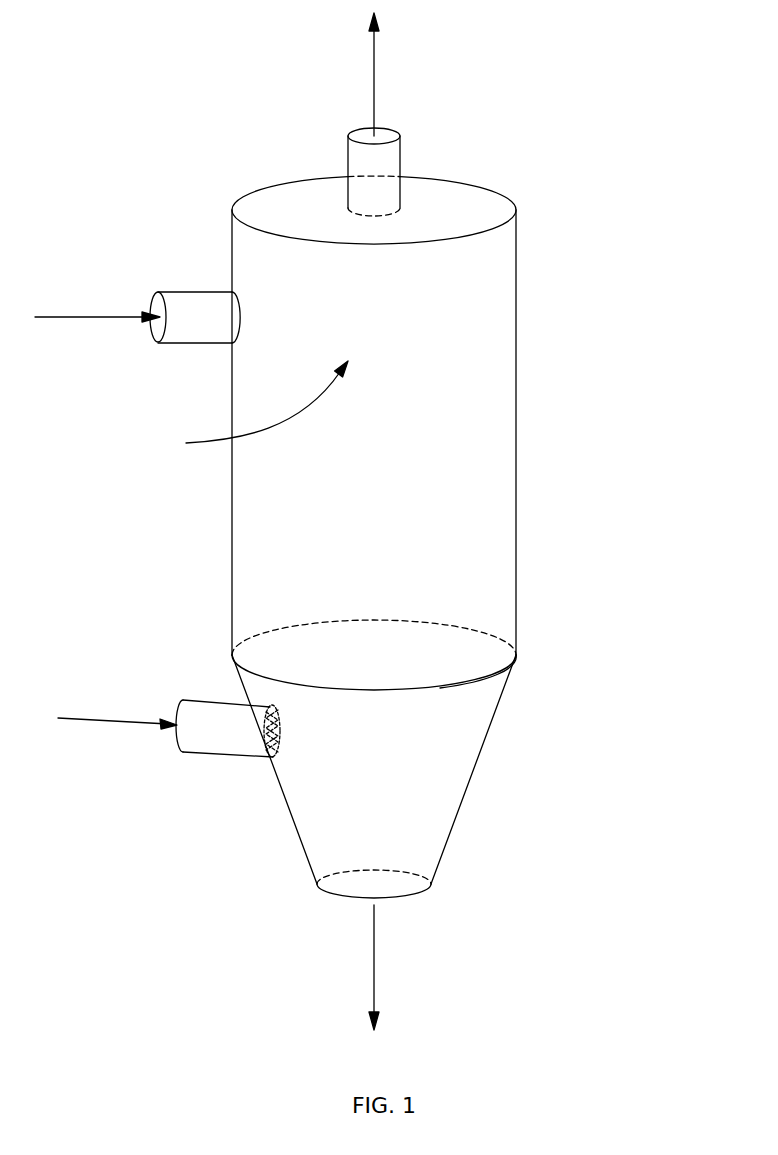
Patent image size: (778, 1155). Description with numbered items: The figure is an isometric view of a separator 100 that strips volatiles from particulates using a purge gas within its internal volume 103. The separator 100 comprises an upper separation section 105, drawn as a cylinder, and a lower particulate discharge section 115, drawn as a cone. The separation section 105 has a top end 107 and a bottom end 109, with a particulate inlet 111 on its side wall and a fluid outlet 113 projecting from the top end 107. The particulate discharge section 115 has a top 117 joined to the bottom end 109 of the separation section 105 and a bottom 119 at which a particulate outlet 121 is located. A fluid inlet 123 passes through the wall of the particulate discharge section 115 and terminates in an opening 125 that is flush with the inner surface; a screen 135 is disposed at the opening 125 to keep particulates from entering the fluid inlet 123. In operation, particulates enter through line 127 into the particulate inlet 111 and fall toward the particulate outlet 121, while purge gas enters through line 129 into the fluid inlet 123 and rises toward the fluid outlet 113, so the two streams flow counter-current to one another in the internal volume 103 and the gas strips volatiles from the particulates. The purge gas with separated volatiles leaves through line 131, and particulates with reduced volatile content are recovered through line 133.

The separator 100 is at (115, 38).
The internal volume 103 is at (240, 408).
The separation section 105 is at (515, 358).
The top end 107 is at (277, 183).
The bottom end 109 is at (495, 672).
The particulate inlet 111 is at (190, 292).
The fluid outlet 113 is at (400, 155).
The particulate discharge section 115 is at (472, 773).
The top 117 is at (468, 680).
The bottom 119 is at (410, 898).
The particulate outlet 121 is at (330, 905).
The fluid inlet 123 is at (203, 700).
The opening 125 is at (295, 731).
The line 127 is at (75, 318).
The line 129 is at (80, 718).
The line 131 is at (374, 67).
The line 133 is at (374, 978).
The screen 135 is at (280, 720).